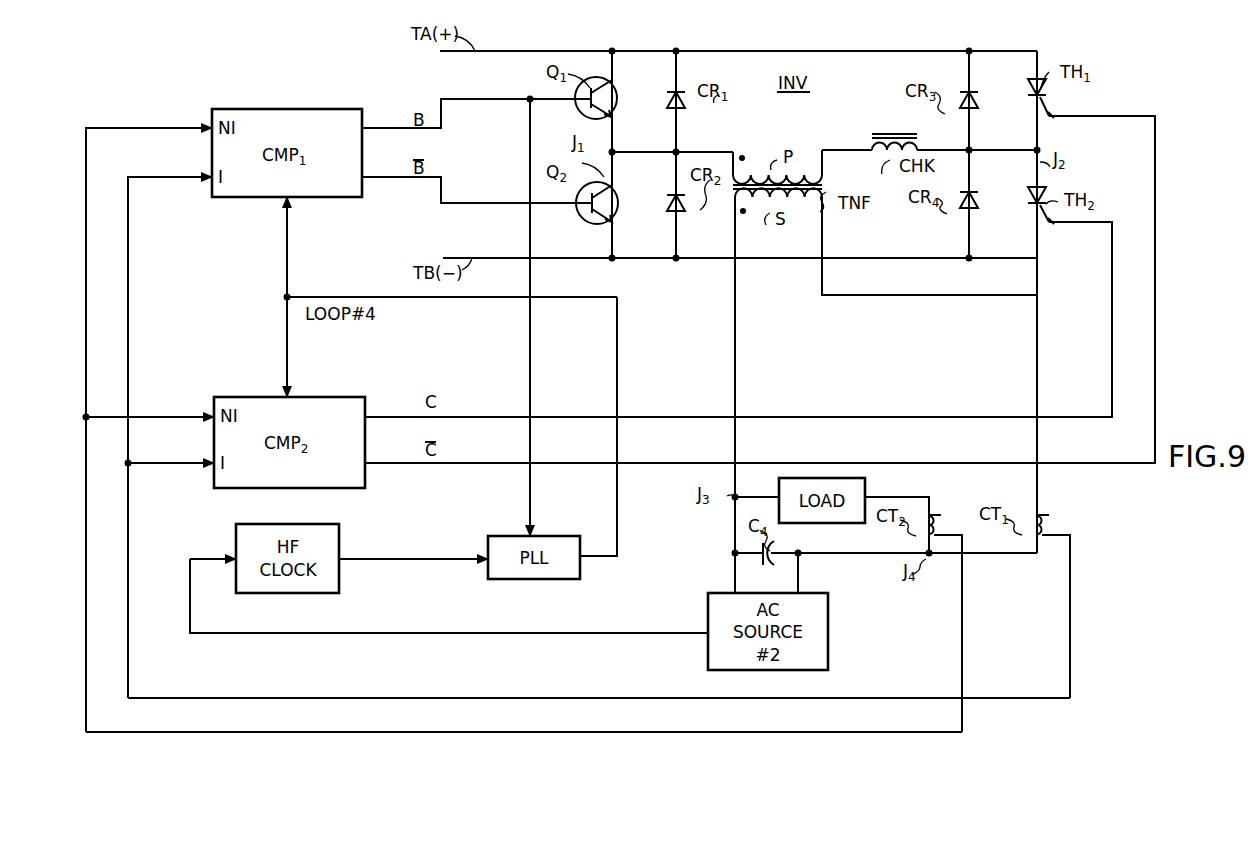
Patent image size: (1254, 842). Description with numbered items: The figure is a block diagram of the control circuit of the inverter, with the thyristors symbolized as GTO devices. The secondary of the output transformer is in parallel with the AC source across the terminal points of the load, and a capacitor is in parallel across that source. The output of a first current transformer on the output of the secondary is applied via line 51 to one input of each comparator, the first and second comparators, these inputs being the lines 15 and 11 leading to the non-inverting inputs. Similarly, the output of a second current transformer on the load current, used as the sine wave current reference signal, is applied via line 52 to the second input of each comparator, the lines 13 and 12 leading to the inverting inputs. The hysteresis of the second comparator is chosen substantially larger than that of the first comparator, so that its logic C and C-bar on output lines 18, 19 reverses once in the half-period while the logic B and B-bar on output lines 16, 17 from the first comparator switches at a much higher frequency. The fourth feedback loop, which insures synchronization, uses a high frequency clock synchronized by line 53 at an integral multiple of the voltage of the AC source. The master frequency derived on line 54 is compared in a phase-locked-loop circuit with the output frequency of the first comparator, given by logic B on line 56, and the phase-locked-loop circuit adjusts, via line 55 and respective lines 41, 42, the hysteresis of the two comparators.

The non-inverting input line of comparator CMP2 11 is at (172, 414).
The inverting input line of comparator CMP2 12 is at (178, 460).
The inverting input line of comparator CMP1 13 is at (154, 174).
The non-inverting input line of comparator CMP1 15 is at (149, 128).
The output B of comparator CMP1 16 is at (406, 127).
The complementary output B-bar of comparator CMP1 17 is at (406, 175).
The output C of comparator CMP2 18 is at (411, 414).
The complementary output C-bar of comparator CMP2 19 is at (411, 461).
The hysteresis adjusting line 41 is at (287, 264).
The hysteresis adjusting line 42 is at (287, 343).
The current transformer output line 51 is at (1070, 590).
The current reference line 52 is at (970, 590).
The synchronizing line 53 is at (430, 633).
The master frequency line 54 is at (381, 555).
The PLL output line 55 is at (617, 496).
The comparator output line 56 is at (530, 496).